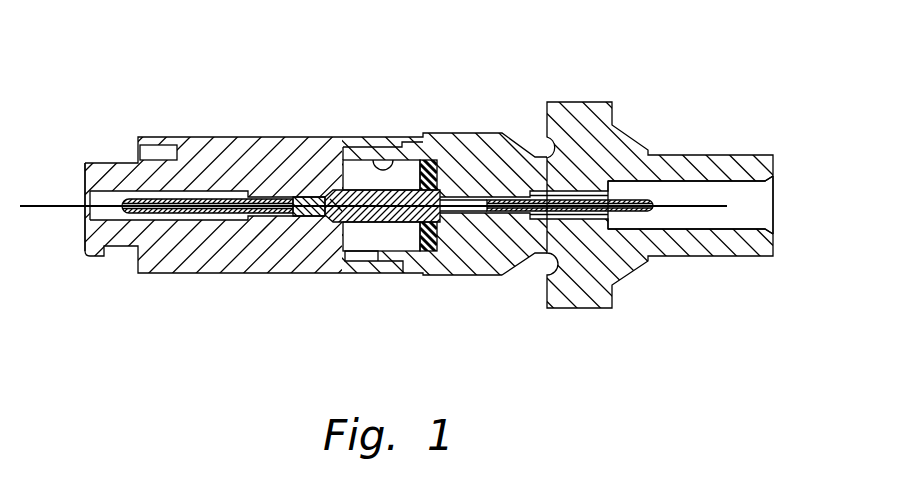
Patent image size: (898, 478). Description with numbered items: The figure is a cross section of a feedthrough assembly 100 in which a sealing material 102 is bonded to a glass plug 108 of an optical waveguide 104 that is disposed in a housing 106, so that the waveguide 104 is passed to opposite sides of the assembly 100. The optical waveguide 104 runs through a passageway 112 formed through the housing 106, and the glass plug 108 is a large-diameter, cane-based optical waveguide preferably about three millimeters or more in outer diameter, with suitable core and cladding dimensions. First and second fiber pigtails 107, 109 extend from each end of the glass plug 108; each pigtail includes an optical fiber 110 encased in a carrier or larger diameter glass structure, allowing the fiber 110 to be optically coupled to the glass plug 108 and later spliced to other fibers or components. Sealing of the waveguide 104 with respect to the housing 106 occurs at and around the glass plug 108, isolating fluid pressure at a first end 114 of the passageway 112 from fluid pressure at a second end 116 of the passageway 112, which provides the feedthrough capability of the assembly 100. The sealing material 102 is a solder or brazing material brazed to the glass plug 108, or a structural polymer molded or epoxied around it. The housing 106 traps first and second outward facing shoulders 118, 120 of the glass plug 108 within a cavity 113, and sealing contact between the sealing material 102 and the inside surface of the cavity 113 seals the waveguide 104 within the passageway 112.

The feedthrough assembly 100 is at (161, 43).
The sealing material 102 is at (428, 172).
The optical waveguide 104 is at (355, 182).
The housing 106 is at (575, 102).
The first fiber pigtail 107 is at (207, 200).
The glass plug 108 is at (387, 222).
The second fiber pigtail 109 is at (645, 208).
The optical fiber 110 is at (62, 213).
The passageway 112 is at (720, 188).
The cavity 113 is at (393, 165).
The first end 114 is at (773, 197).
The second end 116 is at (85, 197).
The first outward facing shoulder 118 is at (340, 222).
The second outward facing shoulder 120 is at (440, 213).